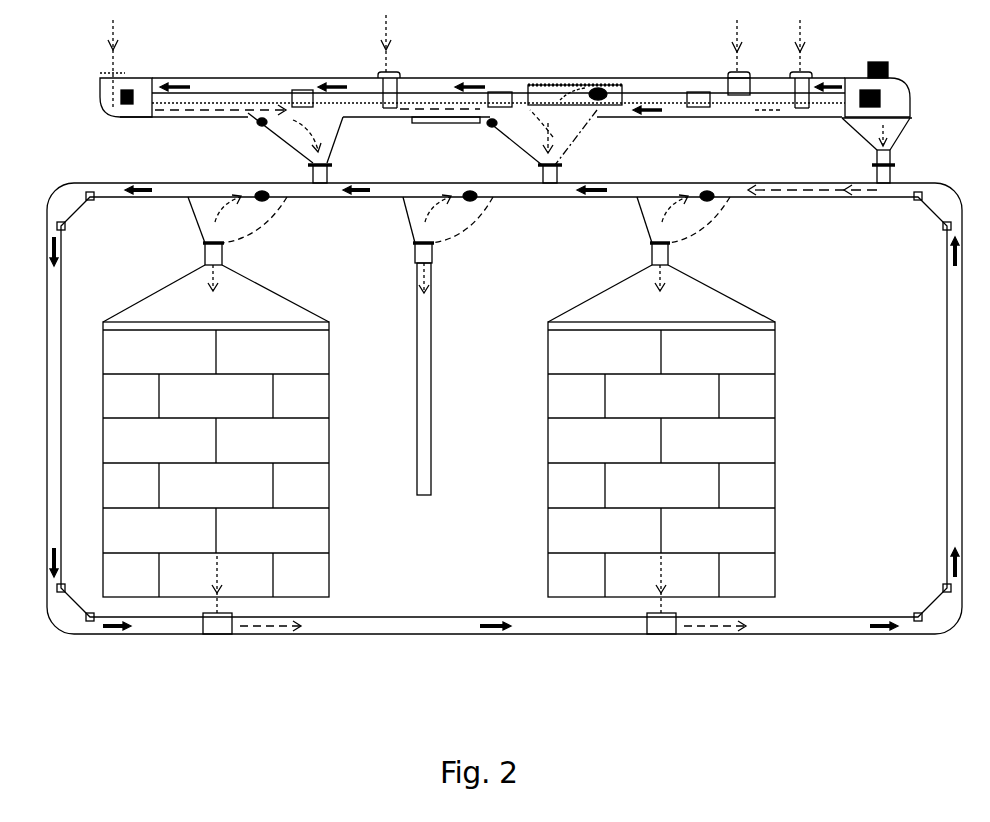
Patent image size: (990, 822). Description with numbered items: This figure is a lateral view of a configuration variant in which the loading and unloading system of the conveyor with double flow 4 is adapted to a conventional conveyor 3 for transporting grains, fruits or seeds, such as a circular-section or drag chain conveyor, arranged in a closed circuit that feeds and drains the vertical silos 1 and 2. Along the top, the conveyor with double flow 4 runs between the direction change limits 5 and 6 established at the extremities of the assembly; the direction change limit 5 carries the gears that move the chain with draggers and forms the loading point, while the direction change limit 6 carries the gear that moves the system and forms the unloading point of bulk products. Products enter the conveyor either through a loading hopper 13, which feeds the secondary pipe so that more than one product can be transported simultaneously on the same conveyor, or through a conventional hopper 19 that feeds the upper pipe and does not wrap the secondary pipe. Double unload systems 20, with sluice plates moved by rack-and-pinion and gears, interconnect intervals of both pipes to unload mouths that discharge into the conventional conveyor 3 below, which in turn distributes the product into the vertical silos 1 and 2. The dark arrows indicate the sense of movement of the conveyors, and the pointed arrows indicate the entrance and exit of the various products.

The vertical silo 1 is at (305, 533).
The vertical silo 2 is at (758, 533).
The conventional conveyor 3 is at (947, 330).
The conveyor with double flow 4 is at (482, 99).
The direction change limit 5 is at (108, 98).
The direction change limit 6 is at (912, 110).
The loading hopper 13 is at (378, 72).
The conventional hopper 19 is at (722, 72).
The double unload system 20 is at (562, 143).